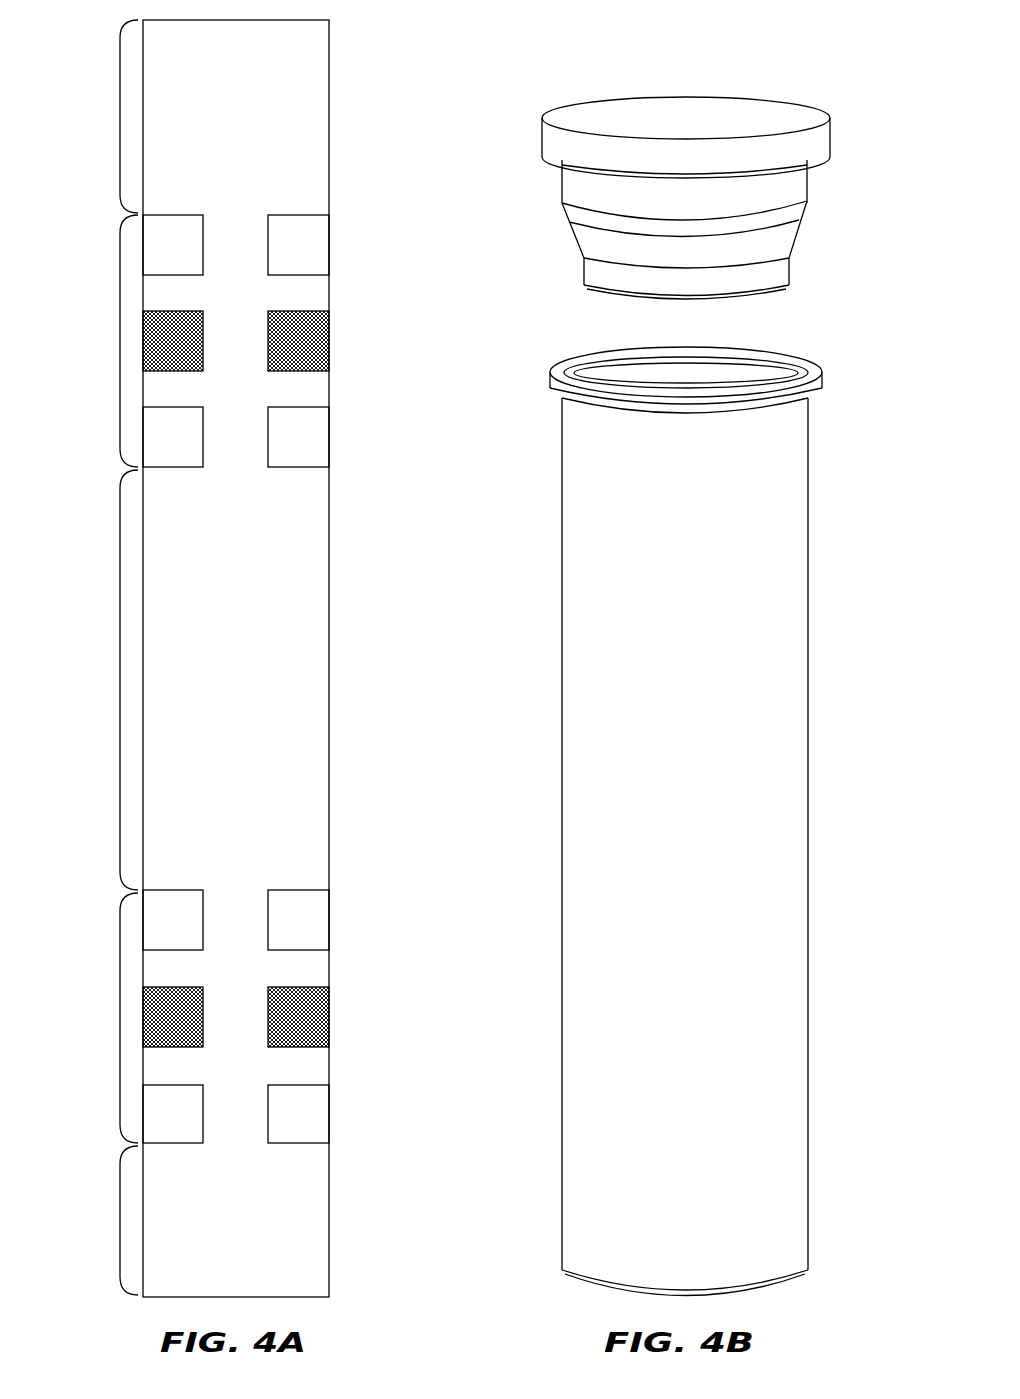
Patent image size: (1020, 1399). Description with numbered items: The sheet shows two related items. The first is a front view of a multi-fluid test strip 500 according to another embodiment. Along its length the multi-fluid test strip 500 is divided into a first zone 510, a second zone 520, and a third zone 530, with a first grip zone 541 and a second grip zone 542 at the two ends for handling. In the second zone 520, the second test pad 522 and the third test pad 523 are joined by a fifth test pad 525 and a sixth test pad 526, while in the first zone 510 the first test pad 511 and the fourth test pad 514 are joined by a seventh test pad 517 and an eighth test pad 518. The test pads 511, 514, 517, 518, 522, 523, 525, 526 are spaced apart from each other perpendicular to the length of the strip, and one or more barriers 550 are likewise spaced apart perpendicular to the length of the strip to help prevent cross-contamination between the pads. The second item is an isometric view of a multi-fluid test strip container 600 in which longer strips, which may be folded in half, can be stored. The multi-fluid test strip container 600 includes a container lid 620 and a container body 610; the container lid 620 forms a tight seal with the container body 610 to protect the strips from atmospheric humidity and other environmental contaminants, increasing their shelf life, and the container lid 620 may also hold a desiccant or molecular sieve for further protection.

In FIG. 4A, the multi-fluid test strip 500 is at (368, 77).
In FIG. 4A, the second grip zone 542 is at (120, 114).
In FIG. 4A, the first grip zone 541 is at (120, 1218).
In FIG. 4A, the second zone 520 is at (120, 334).
In FIG. 4A, the third zone 530 is at (120, 677).
In FIG. 4A, the first zone 510 is at (120, 1013).
In FIG. 4A, the third test pad 523 is at (157, 245).
In FIG. 4A, the fifth test pad 525 is at (303, 248).
In FIG. 4A, the second test pad 522 is at (157, 443).
In FIG. 4A, the sixth test pad 526 is at (297, 433).
In FIG. 4A, the fourth test pad 514 is at (157, 913).
In FIG. 4A, the seventh test pad 517 is at (297, 920).
In FIG. 4A, the first test pad 511 is at (157, 1113).
In FIG. 4A, the eighth test pad 518 is at (297, 1117).
In FIG. 4A, the barriers 550 is at (203, 320).
In FIG. 4B, the multi-fluid test strip container 600 is at (648, 659).
In FIG. 4B, the container lid 620 is at (627, 104).
In FIG. 4B, the container body 610 is at (563, 742).